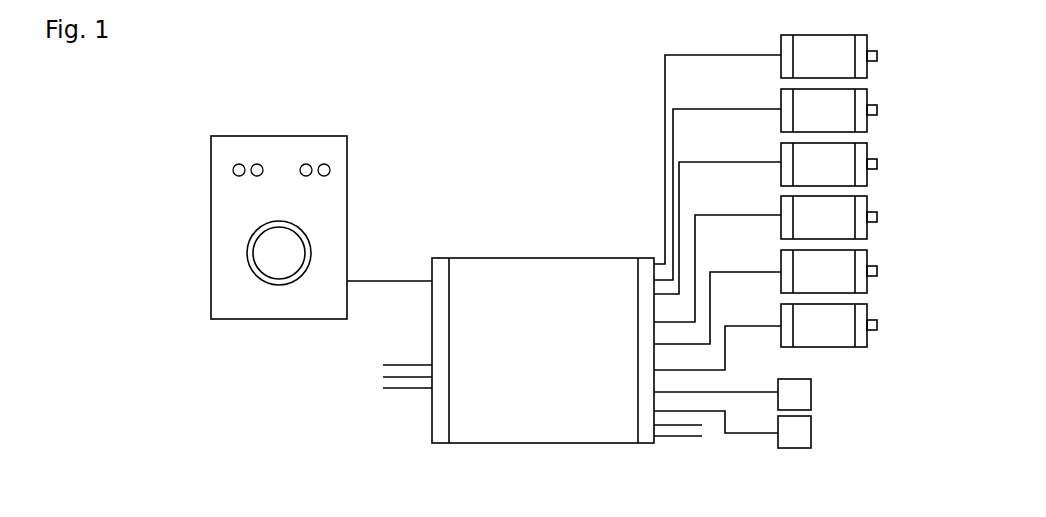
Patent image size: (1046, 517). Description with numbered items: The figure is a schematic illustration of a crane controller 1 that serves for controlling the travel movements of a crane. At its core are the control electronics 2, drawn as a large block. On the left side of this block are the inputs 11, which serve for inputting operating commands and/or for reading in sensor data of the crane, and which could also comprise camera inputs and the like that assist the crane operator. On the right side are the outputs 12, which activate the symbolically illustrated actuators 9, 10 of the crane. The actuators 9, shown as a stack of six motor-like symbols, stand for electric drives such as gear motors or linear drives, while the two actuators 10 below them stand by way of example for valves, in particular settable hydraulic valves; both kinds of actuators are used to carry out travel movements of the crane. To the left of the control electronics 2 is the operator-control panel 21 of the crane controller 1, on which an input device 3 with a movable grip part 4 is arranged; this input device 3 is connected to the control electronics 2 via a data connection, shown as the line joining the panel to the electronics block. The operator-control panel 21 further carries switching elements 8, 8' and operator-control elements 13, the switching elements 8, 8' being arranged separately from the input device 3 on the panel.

The crane controller 1 is at (450, 72).
The control electronics 2 is at (531, 341).
The input device 3 is at (280, 268).
The movable grip part 4 is at (302, 253).
The switching element 8 is at (317, 105).
The switching element 8' is at (353, 111).
The actuators 9 is at (843, 168).
The actuators 10 is at (792, 395).
The inputs 11 is at (442, 413).
The outputs 12 is at (647, 428).
The operator-control elements 13 is at (243, 164).
The operator-control panel 21 is at (227, 272).